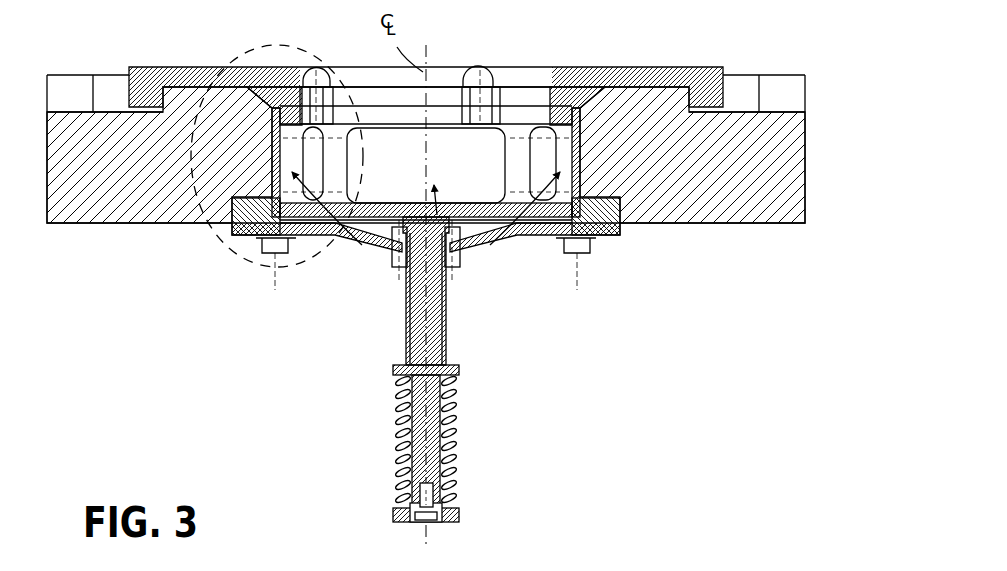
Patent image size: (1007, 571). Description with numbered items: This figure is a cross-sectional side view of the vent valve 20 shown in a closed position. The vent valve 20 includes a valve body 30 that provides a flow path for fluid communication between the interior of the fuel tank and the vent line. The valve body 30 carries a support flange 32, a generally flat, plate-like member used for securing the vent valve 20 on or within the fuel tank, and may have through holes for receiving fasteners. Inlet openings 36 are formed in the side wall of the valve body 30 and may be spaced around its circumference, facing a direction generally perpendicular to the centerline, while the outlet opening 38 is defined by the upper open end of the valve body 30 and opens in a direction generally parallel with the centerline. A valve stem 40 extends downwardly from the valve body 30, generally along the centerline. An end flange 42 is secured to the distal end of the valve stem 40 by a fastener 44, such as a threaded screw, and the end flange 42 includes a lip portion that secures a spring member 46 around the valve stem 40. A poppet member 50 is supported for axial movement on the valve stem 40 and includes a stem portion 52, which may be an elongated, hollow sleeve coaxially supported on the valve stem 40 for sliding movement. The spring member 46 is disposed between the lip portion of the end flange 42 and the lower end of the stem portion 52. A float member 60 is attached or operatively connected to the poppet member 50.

The vent valve 20 is at (758, 50).
The valve body 30 is at (387, 115).
The support flange 32 is at (660, 75).
The inlet openings 36 is at (422, 225).
The outlet opening 38 is at (537, 95).
The valve stem 40 is at (442, 337).
The end flange 42 is at (447, 520).
The fastener 44 is at (427, 522).
The spring member 46 is at (452, 425).
The poppet member 50 is at (227, 227).
The stem portion 52 is at (328, 237).
The float member 60 is at (787, 170).